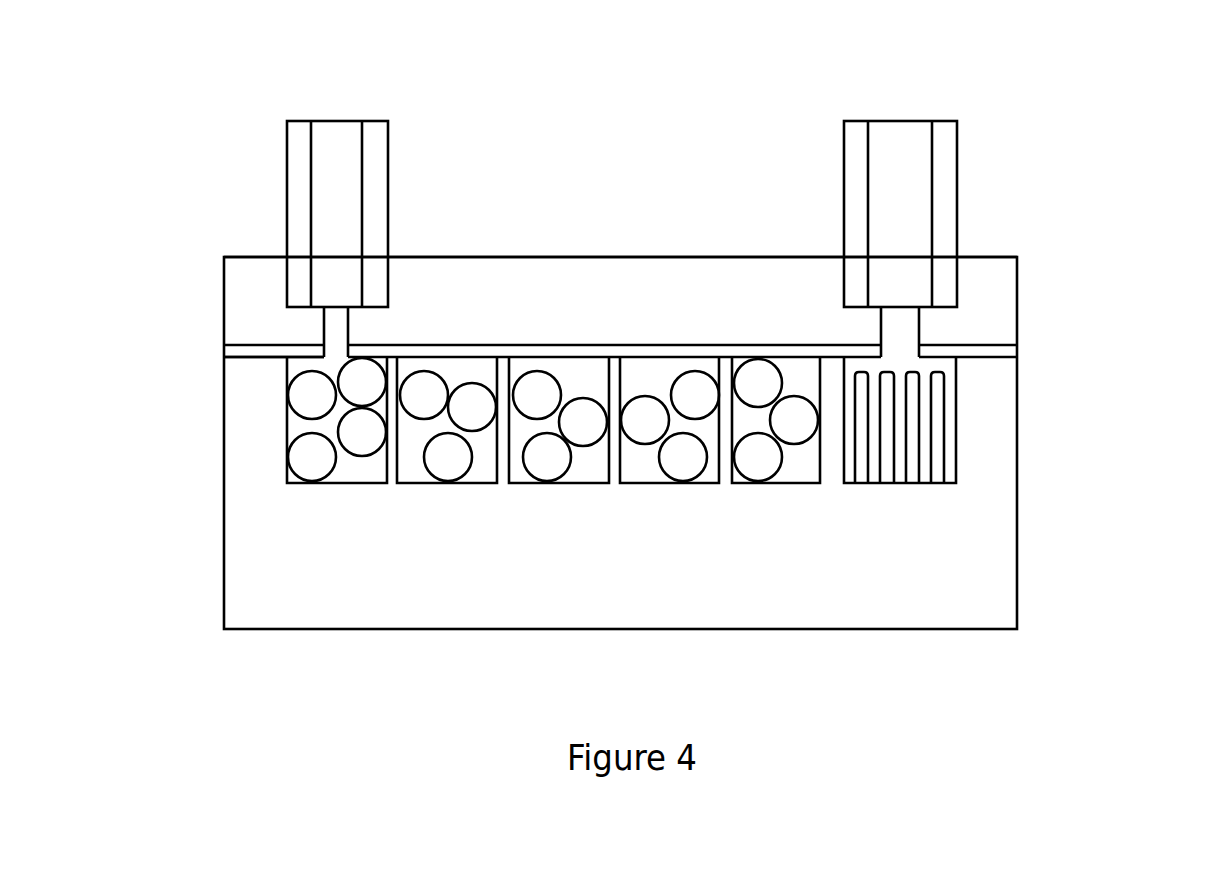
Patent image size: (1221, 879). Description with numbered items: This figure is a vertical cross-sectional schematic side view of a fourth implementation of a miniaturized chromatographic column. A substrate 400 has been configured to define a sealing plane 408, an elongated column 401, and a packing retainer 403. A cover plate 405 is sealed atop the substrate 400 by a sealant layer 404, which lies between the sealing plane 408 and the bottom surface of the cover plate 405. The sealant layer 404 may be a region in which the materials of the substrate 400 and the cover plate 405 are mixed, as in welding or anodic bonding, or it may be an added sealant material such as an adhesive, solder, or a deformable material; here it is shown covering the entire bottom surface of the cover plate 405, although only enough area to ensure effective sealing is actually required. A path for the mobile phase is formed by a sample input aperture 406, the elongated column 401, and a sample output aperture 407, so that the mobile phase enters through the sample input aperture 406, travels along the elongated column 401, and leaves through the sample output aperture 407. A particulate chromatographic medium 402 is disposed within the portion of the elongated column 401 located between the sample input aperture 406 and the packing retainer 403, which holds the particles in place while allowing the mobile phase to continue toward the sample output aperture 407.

The substrate 400 is at (294, 546).
The elongated column 401 is at (577, 363).
The particulate chromatographic medium 402 is at (296, 399).
The packing retainer 403 is at (924, 438).
The sealant layer 404 is at (1035, 351).
The cover plate 405 is at (1006, 294).
The sample input aperture 406 is at (273, 100).
The sample output aperture 407 is at (908, 102).
The sealing plane 408 is at (999, 369).